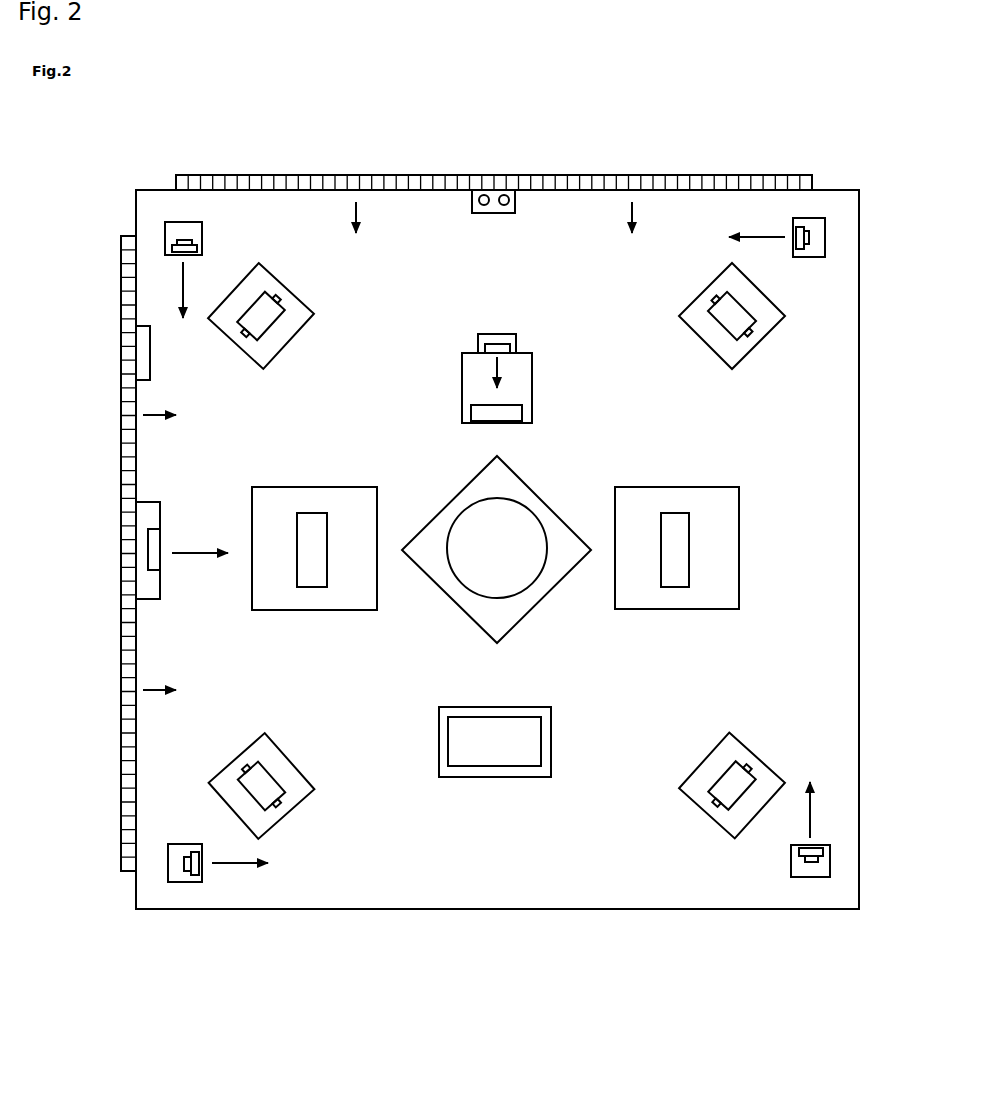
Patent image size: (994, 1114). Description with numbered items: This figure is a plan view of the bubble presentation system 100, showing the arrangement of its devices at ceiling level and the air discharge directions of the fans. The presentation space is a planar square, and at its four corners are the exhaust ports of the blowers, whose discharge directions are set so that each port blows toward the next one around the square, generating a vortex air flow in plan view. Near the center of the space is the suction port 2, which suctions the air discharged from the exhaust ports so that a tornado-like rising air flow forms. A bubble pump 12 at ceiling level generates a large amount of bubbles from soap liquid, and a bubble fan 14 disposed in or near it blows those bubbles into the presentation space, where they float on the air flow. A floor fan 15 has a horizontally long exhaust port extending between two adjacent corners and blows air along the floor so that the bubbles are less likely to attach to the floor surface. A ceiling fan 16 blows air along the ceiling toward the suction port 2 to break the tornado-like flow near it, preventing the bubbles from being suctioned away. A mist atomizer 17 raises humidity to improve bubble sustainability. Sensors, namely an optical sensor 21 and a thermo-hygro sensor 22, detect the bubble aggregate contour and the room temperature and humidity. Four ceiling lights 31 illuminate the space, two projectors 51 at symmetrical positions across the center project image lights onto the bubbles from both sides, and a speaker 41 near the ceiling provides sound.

The bubble presentation system 100 is at (133, 156).
The floor fan 15 is at (232, 175).
The optical sensor 21 is at (484, 194).
The thermo-hygro sensor 22 is at (504, 194).
The ceiling lights 31 is at (287, 347).
The mist atomizer 17 is at (150, 360).
The ceiling fan 16 is at (160, 512).
The bubble fan 14 is at (516, 340).
The bubble pump 12 is at (532, 400).
The suction port 2 is at (512, 575).
The projectors 51 is at (312, 610).
The speaker 41 is at (551, 745).